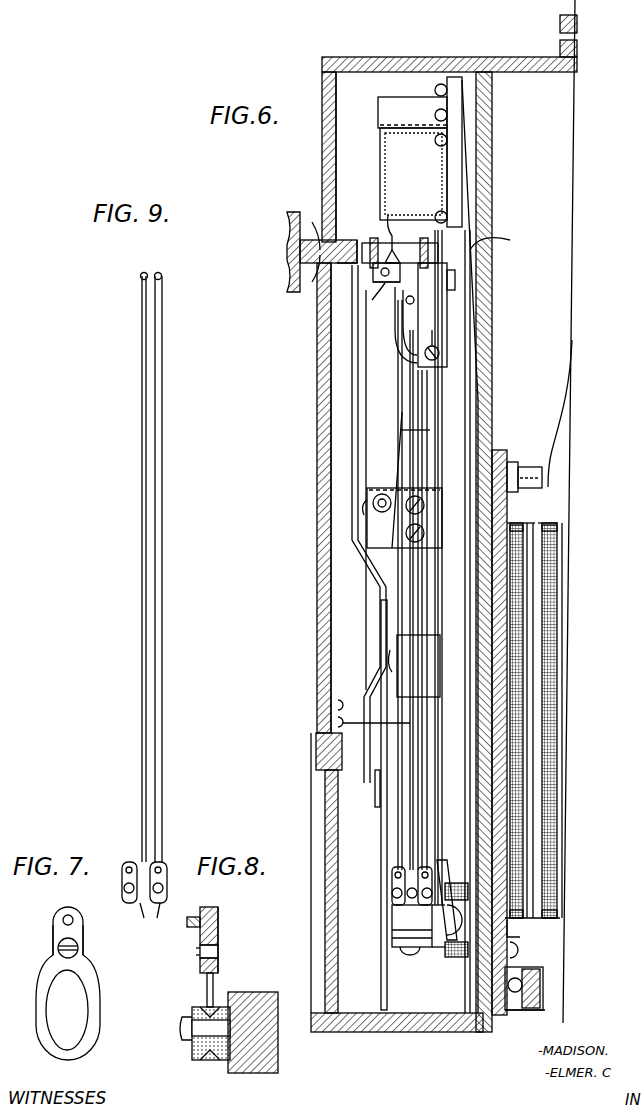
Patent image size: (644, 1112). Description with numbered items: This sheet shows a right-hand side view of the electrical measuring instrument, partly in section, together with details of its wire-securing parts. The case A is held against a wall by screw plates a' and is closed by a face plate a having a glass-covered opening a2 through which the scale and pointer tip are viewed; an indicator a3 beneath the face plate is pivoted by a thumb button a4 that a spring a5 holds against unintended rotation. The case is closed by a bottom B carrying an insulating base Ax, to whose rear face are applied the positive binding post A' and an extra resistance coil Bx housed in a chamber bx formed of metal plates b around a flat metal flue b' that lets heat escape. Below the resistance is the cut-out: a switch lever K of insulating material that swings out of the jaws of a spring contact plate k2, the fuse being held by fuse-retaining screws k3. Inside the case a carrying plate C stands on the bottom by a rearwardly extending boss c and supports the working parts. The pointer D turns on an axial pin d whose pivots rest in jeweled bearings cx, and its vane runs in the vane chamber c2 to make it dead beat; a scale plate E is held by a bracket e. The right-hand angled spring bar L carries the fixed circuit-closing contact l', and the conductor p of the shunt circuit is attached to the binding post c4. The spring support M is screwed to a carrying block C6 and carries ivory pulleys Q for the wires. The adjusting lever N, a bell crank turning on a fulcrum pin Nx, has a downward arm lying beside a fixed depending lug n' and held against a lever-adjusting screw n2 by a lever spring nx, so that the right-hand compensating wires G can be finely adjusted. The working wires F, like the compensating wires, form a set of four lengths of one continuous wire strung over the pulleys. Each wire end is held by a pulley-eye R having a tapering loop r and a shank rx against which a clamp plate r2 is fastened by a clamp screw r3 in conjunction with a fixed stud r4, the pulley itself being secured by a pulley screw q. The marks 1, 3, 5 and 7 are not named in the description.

In FIG. 6, the case A is at (444, 532).
In FIG. 6, the screw plates a' is at (566, 511).
In FIG. 6, the face plate a is at (313, 402).
In FIG. 6, the glass-covered opening a2 is at (318, 842).
In FIG. 6, the index or indicator a3 is at (375, 772).
In FIG. 6, the thumb button a4 is at (287, 252).
In FIG. 6, the spring a5 is at (315, 290).
In FIG. 6, the bottom B is at (498, 195).
In FIG. 6, the extra resistance coil Bx is at (548, 800).
In FIG. 6, the metal plates b is at (551, 720).
In FIG. 6, the flat metal flue b' is at (553, 720).
In FIG. 6, the chamber bx is at (515, 938).
In FIG. 6, the boss c is at (492, 400).
In FIG. 6, the vane chamber c2 is at (406, 103).
In FIG. 6, the binding post c4 is at (368, 514).
In FIG. 6, the jeweled bearings cx is at (492, 248).
In FIG. 6, the carrying plate C is at (449, 567).
In FIG. 6, the carrying block C6 is at (412, 930).
In FIG. 6, the axial pin d is at (398, 258).
In FIG. 6, the needle or pointer D is at (362, 468).
In FIG. 6, the bracket e is at (392, 690).
In FIG. 6, the scale plate E is at (381, 848).
In FIG. 6, the right hand set of compensating wires G is at (412, 775).
In FIG. 6, the right-hand angled spring bar L is at (438, 460).
In FIG. 6, the adjusting lever N is at (432, 263).
In FIG. 6, the fulcrum pin Nx is at (390, 296).
In FIG. 6, the fixed depending lug n' is at (436, 315).
In FIG. 6, the lever spring nx is at (403, 326).
In FIG. 6, the lever-adjusting screw n2 is at (440, 355).
In FIG. 6, the fixed circuit closing contact l' is at (374, 486).
In FIG. 6, the conductor p is at (402, 414).
In FIG. 6, the insulating base Ax is at (505, 450).
In FIG. 6, the positive binding post A' is at (526, 465).
In FIG. 6, the conductor 1 is at (548, 488).
In FIG. 6, the conductor 3 is at (478, 574).
In FIG. 6, the slanted plate 5 is at (460, 882).
In FIG. 6, the spring 7 is at (445, 952).
In FIG. 6, the spring support M is at (430, 948).
In FIG. 6, the pulley-eye R is at (410, 870).
In FIG. 9, the pulley-eye R is at (122, 892).
In FIG. 7, the pulley-eye R is at (100, 995).
In FIG. 8, the pulley-eye R is at (218, 966).
In FIG. 6, the spring contact plate k2 is at (543, 990).
In FIG. 6, the fuse-retaining screws k3 is at (540, 1003).
In FIG. 6, the switch lever K is at (534, 1011).
In FIG. 9, the right hand set of working wires F is at (142, 578).
In FIG. 9, the ivory pulleys Q is at (158, 272).
In FIG. 8, the ivory pulleys Q is at (198, 1060).
In FIG. 7, the tapering loop r is at (67, 1010).
In FIG. 8, the tapering loop r is at (207, 990).
In FIG. 7, the shank rx is at (52, 930).
In FIG. 8, the shank rx is at (218, 921).
In FIG. 7, the clamp plate r2 is at (58, 938).
In FIG. 7, the clamp screw r3 is at (78, 946).
In FIG. 8, the clamp screw r3 is at (200, 952).
In FIG. 7, the fixed stud r4 is at (74, 918).
In FIG. 8, the fixed stud r4 is at (187, 920).
In FIG. 8, the pulley screw q is at (182, 1030).